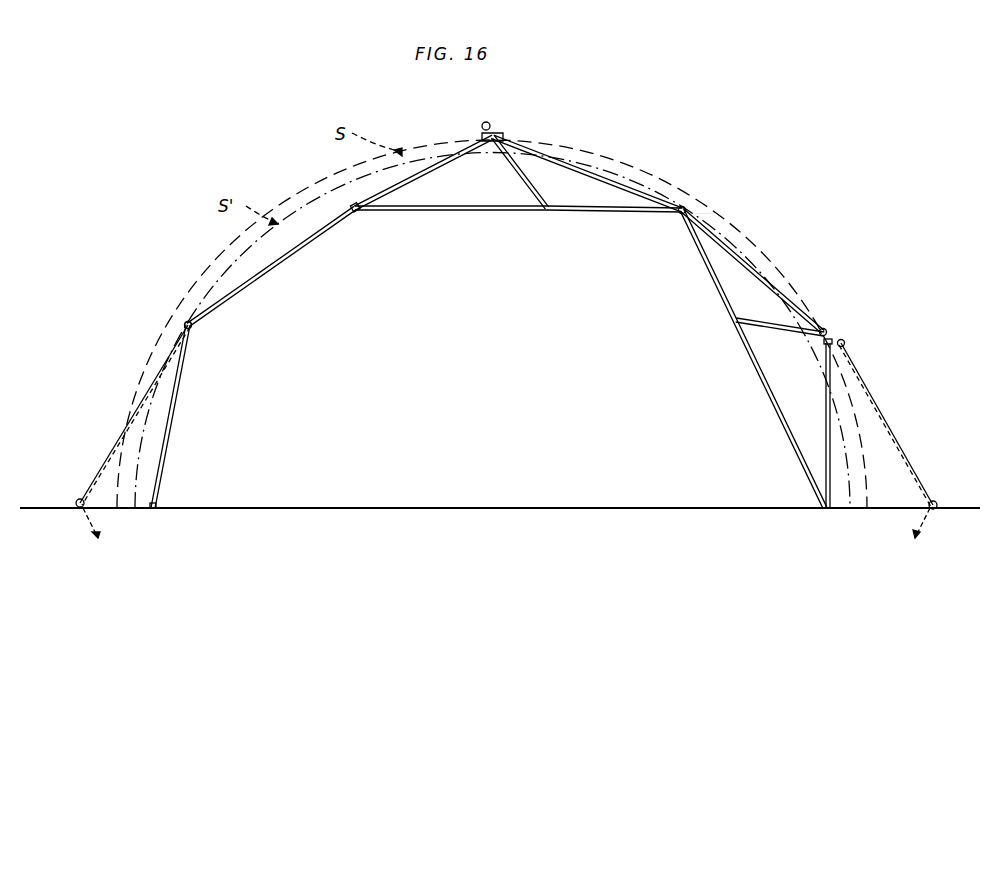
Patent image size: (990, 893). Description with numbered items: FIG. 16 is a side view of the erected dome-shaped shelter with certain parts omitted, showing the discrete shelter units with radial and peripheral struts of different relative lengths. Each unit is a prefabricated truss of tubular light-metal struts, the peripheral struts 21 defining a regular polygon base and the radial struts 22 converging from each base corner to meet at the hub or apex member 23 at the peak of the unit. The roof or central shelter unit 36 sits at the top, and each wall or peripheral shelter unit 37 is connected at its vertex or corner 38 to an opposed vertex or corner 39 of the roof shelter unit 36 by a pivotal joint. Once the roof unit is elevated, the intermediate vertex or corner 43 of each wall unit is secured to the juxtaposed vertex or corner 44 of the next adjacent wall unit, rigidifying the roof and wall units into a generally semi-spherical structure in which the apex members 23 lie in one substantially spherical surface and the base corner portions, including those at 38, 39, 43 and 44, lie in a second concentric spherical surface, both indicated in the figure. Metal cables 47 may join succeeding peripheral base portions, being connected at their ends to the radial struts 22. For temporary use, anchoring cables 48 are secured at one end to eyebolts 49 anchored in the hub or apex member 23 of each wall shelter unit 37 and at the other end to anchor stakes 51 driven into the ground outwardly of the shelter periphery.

The peripheral strut 21 is at (497, 205).
The radial strut 22 is at (550, 160).
The hub or apex member 23 is at (497, 134).
The roof or central shelter unit 36 is at (602, 169).
The wall or peripheral shelter unit 37 is at (775, 277).
The vertex or corner of wall shelter unit 38 is at (700, 214).
The vertex or corner of roof shelter unit 39 is at (682, 206).
The intermediate vertex or corner 43 is at (185, 324).
The intermediate vertex or corner 44 is at (150, 321).
The metal cable 47 is at (156, 505).
The anchoring cable 48 is at (104, 470).
The eyebolt 49 is at (486, 122).
The anchor stake 51 is at (78, 501).